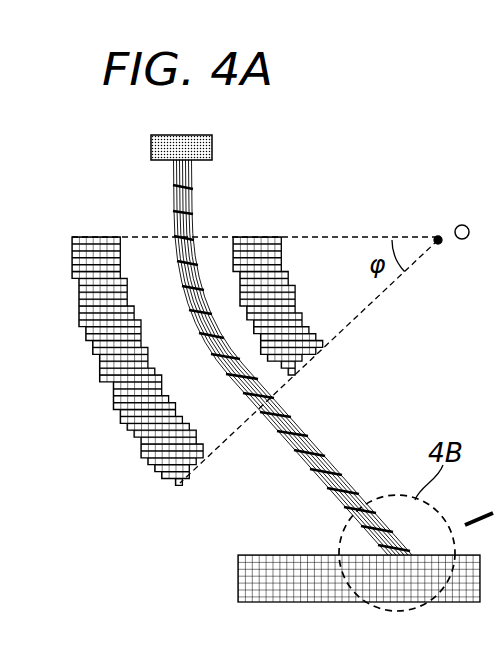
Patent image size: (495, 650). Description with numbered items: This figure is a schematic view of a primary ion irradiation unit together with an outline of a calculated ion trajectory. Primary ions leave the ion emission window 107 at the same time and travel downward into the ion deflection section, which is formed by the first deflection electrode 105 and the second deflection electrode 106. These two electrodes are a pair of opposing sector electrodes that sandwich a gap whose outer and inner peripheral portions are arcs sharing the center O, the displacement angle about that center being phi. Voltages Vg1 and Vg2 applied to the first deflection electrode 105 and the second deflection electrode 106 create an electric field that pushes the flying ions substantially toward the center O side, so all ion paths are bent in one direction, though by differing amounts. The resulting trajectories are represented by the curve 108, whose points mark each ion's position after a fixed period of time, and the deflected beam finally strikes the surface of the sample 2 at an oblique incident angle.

The sample 2 is at (222, 573).
The first deflection electrode 105 is at (136, 437).
The second deflection electrode 106 is at (286, 270).
The ion emission window 107 is at (214, 146).
The curve 108 is at (330, 462).